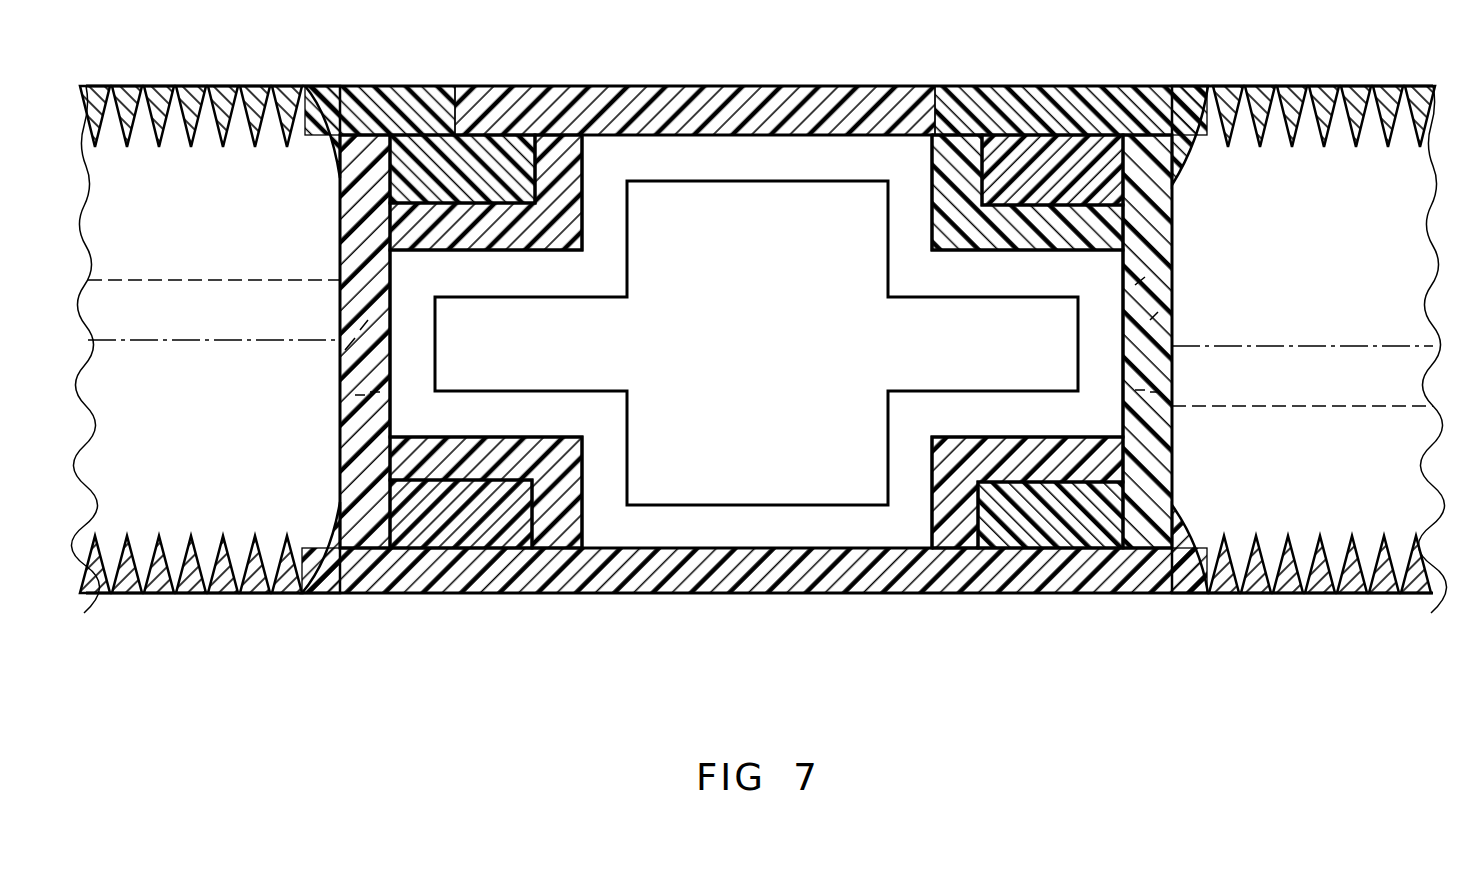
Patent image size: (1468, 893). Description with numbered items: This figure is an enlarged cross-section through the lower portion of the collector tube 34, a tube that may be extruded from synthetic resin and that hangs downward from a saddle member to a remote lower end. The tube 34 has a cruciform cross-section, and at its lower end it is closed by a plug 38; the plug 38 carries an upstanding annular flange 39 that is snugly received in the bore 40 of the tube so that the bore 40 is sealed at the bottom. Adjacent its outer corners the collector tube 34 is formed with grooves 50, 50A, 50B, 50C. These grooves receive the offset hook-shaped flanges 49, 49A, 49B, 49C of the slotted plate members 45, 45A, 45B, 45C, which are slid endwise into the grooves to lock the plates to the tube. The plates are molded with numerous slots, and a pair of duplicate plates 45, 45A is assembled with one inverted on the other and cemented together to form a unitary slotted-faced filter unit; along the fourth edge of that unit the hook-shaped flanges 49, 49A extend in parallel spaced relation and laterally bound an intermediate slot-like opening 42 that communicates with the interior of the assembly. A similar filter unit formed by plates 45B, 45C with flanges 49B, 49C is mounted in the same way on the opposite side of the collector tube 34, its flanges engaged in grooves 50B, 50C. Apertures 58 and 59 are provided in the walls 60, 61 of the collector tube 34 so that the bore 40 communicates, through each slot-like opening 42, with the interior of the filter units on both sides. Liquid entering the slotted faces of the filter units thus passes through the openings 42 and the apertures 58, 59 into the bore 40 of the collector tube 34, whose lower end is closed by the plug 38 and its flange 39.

The collector tube 34 is at (722, 560).
The plug 38 is at (745, 363).
The upstanding annular flange 39 is at (903, 442).
The bore 40 is at (703, 550).
The slot-like opening 42 is at (520, 200).
The slotted plate member 45 is at (1177, 587).
The slotted plate member 45A is at (1192, 86).
The slotted plate member 45B is at (320, 580).
The slotted plate member 45C is at (342, 86).
The hook-shaped flange 49 is at (1063, 540).
The hook-shaped flange 49A is at (1040, 170).
The hook-shaped flange 49B is at (540, 538).
The hook-shaped flange 49C is at (522, 133).
The groove 50 is at (1010, 557).
The groove 50A is at (1012, 133).
The groove 50B is at (490, 547).
The groove 50C is at (460, 132).
The aperture 58 is at (1178, 312).
The aperture 59 is at (340, 383).
The wall 60 is at (1172, 388).
The wall 61 is at (365, 265).